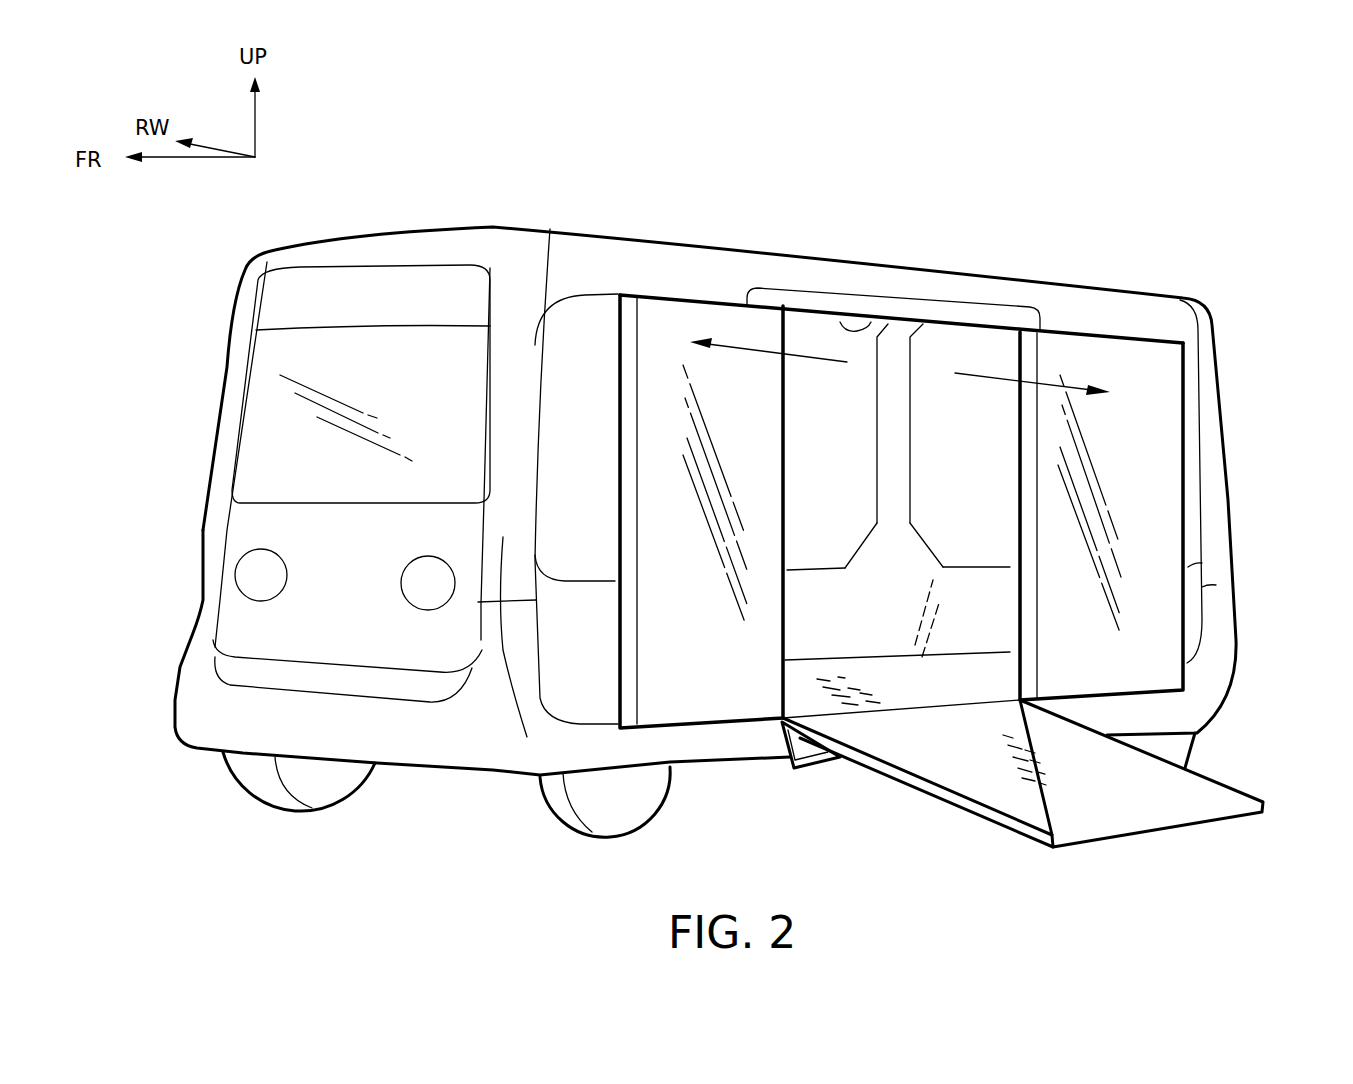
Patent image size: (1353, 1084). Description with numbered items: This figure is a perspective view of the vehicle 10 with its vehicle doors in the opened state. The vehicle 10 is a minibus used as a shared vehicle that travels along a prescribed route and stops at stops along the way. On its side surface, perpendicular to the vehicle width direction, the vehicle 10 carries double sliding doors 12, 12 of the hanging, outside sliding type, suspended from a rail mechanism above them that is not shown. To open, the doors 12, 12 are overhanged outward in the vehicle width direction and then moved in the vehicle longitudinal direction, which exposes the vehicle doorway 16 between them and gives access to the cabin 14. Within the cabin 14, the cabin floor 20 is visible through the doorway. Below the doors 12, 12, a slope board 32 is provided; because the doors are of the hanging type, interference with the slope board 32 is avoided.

The vehicle 10 is at (377, 232).
The sliding door 12 is at (657, 335).
The cabin 14 is at (841, 461).
The vehicle doorway 16 is at (862, 325).
The cabin floor 20 is at (888, 673).
The slope board 32 is at (1177, 797).